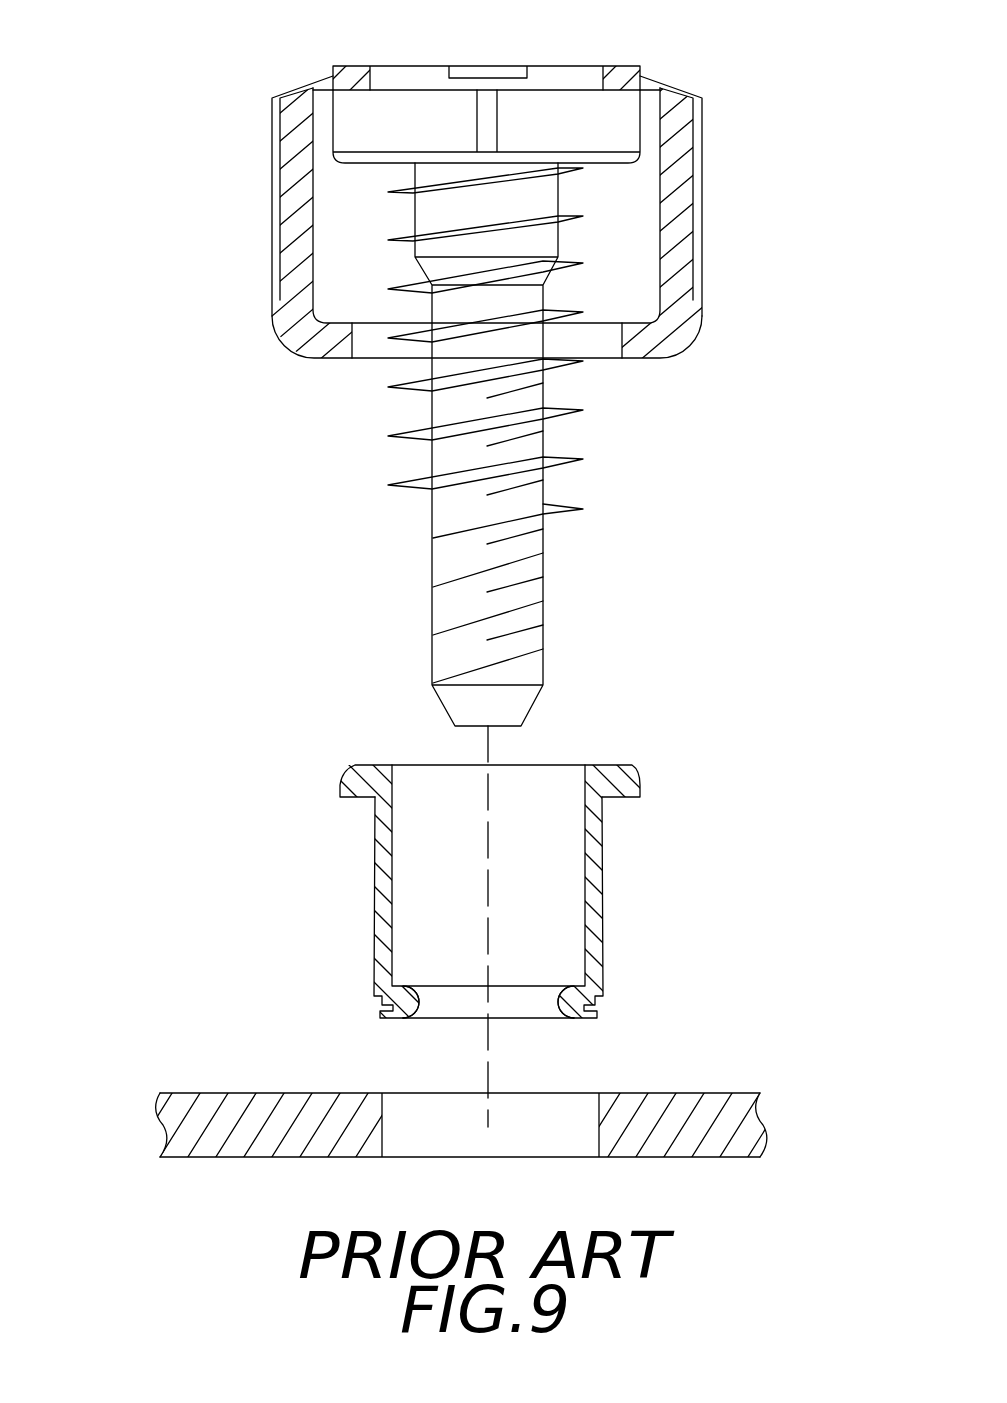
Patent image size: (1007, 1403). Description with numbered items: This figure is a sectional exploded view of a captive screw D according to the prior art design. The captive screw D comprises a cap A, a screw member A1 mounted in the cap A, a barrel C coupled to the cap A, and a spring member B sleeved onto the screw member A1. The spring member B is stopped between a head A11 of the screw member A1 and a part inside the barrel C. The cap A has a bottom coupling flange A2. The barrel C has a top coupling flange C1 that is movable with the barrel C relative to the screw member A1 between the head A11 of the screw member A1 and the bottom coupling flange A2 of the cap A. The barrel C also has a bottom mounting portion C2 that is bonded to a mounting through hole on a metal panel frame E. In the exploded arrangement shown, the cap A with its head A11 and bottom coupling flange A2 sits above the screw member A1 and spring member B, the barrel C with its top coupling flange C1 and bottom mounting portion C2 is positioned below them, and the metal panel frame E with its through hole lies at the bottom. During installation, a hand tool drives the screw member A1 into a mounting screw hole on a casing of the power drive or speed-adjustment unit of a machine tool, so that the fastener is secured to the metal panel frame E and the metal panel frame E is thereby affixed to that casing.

The captive screw D is at (252, 647).
The cap A is at (677, 197).
The head A11 is at (623, 127).
The bottom coupling flange A2 is at (627, 335).
The screw member A1 is at (432, 517).
The spring member B is at (560, 466).
The barrel C is at (597, 885).
The top coupling flange C1 is at (350, 776).
The bottom mounting portion C2 is at (573, 998).
The metal panel frame E is at (175, 1137).